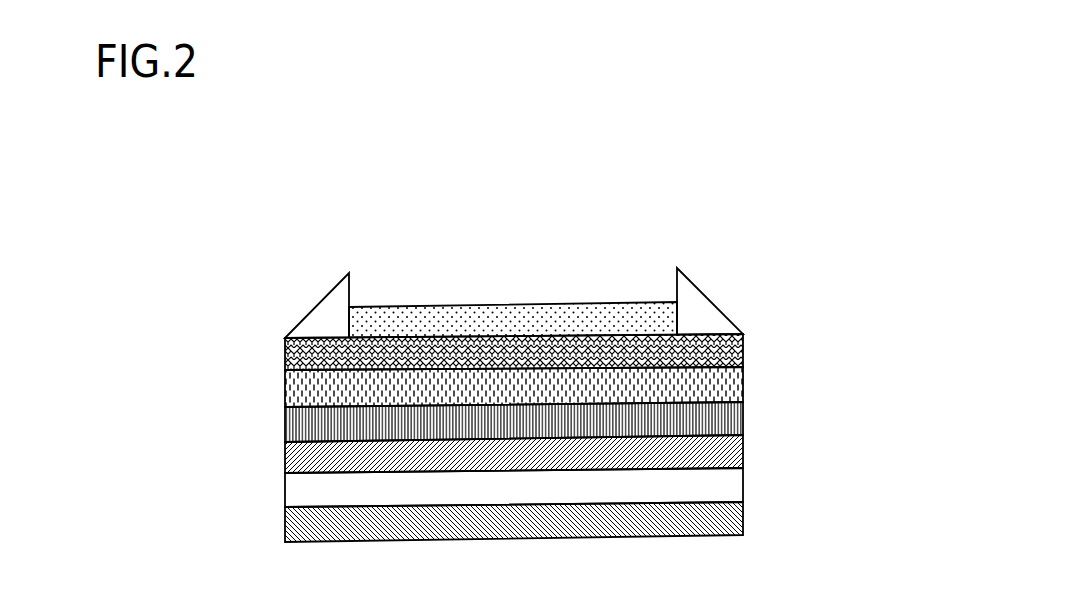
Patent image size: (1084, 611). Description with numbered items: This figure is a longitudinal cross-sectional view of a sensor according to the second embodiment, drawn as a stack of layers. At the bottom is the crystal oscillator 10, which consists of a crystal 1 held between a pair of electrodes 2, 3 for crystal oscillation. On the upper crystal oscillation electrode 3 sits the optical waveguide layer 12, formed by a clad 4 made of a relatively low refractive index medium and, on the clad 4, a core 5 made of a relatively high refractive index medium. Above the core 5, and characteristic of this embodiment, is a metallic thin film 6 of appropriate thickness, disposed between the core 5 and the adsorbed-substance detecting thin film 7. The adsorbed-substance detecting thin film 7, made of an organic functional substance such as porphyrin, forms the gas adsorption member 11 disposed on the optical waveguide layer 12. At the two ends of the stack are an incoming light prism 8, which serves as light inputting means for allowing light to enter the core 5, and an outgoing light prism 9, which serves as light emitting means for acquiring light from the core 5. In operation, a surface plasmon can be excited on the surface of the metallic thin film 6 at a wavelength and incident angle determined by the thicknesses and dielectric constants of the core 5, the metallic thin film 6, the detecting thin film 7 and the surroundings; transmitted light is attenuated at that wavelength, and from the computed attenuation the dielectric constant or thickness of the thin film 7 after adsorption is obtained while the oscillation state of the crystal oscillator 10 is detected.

The crystal 1 is at (294, 497).
The electrode 2 is at (290, 528).
The crystal oscillation electrode 3 is at (290, 460).
The clad 4 is at (288, 428).
The core 5 is at (290, 392).
The metallic thin film 6 is at (288, 352).
The adsorbed-substance detecting thin film 7 is at (623, 318).
The incoming light prism 8 is at (318, 323).
The outgoing light prism 9 is at (700, 310).
The crystal oscillator 10 is at (536, 516).
The gas adsorption member 11 is at (434, 270).
The optical waveguide layer 12 is at (540, 403).